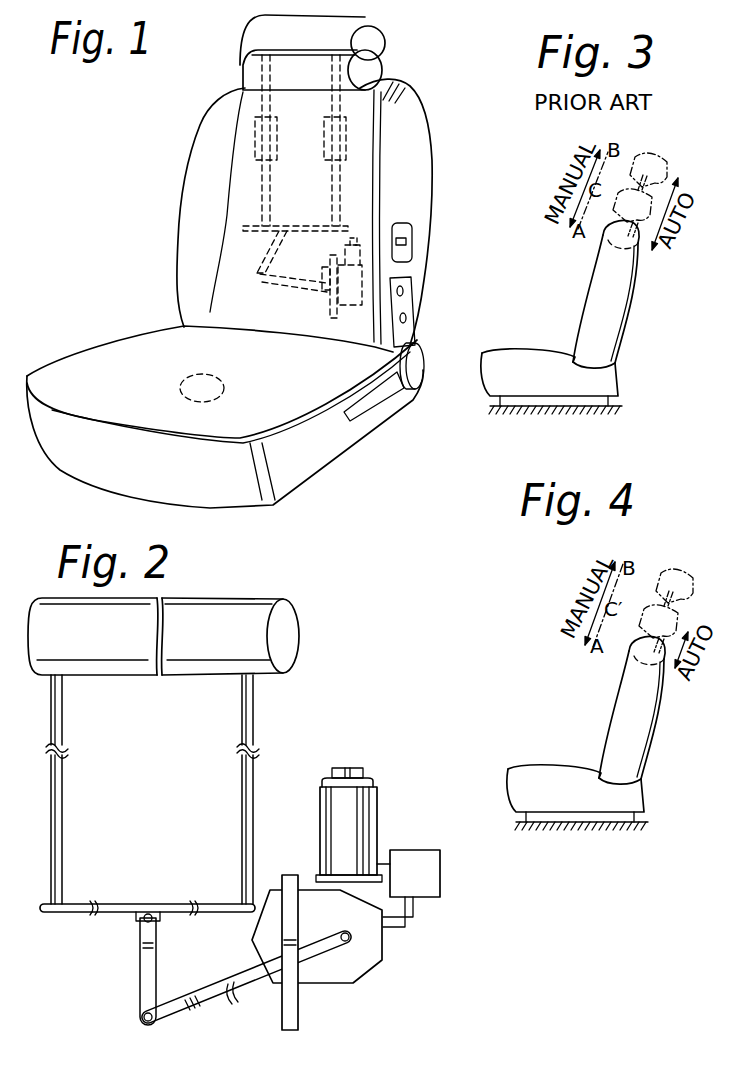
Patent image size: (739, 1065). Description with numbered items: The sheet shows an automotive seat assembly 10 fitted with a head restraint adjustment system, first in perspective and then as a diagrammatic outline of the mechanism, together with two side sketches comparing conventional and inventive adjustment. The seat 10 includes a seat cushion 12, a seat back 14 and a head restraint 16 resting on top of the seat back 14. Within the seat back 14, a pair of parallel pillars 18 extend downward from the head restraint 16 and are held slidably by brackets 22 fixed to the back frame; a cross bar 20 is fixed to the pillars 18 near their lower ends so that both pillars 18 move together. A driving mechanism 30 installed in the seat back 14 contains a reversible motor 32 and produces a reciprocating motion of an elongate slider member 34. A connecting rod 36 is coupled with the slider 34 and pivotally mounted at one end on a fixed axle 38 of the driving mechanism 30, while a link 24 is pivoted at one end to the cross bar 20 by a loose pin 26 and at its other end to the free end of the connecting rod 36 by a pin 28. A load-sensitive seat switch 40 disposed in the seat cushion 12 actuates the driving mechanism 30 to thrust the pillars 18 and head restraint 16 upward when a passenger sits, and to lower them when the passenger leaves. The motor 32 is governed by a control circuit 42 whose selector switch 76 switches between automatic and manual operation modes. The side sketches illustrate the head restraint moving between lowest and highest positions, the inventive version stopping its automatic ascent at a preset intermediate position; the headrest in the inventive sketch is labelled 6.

In FIG. 4, the headrest 6 is at (629, 662).
In FIG. 1, the automotive seat assembly 10 is at (252, 281).
In FIG. 3, the automotive seat assembly 10 is at (574, 283).
In FIG. 4, the automotive seat assembly 10 is at (600, 699).
In FIG. 1, the seat cushion 12 is at (112, 477).
In FIG. 1, the seat back 14 is at (413, 112).
In FIG. 3, the seat back 14 is at (620, 318).
In FIG. 4, the seat back 14 is at (641, 740).
In FIG. 1, the head restraint 16 is at (250, 80).
In FIG. 2, the head restraint 16 is at (240, 606).
In FIG. 3, the head restraint 16 is at (603, 248).
In FIG. 1, the pillars 18 is at (262, 180).
In FIG. 2, the pillars 18 is at (62, 782).
In FIG. 1, the cross bar 20 is at (301, 226).
In FIG. 2, the cross bar 20 is at (78, 913).
In FIG. 1, the brackets 22 is at (256, 130).
In FIG. 1, the link 24 is at (272, 253).
In FIG. 2, the link 24 is at (140, 983).
In FIG. 2, the pin 26 is at (150, 905).
In FIG. 2, the pin 28 is at (140, 1017).
In FIG. 1, the driving mechanism 30 is at (350, 318).
In FIG. 2, the driving mechanism 30 is at (396, 940).
In FIG. 1, the reversible motor 32 is at (375, 213).
In FIG. 2, the reversible motor 32 is at (378, 818).
In FIG. 1, the slider member 34 is at (331, 318).
In FIG. 2, the slider member 34 is at (291, 875).
In FIG. 1, the connecting rod 36 is at (280, 285).
In FIG. 2, the connecting rod 36 is at (200, 1003).
In FIG. 2, the fixed axle 38 is at (340, 932).
In FIG. 1, the seat switch 40 is at (202, 396).
In FIG. 2, the control circuit 42 is at (428, 887).
In FIG. 1, the selector switch 76 is at (413, 237).